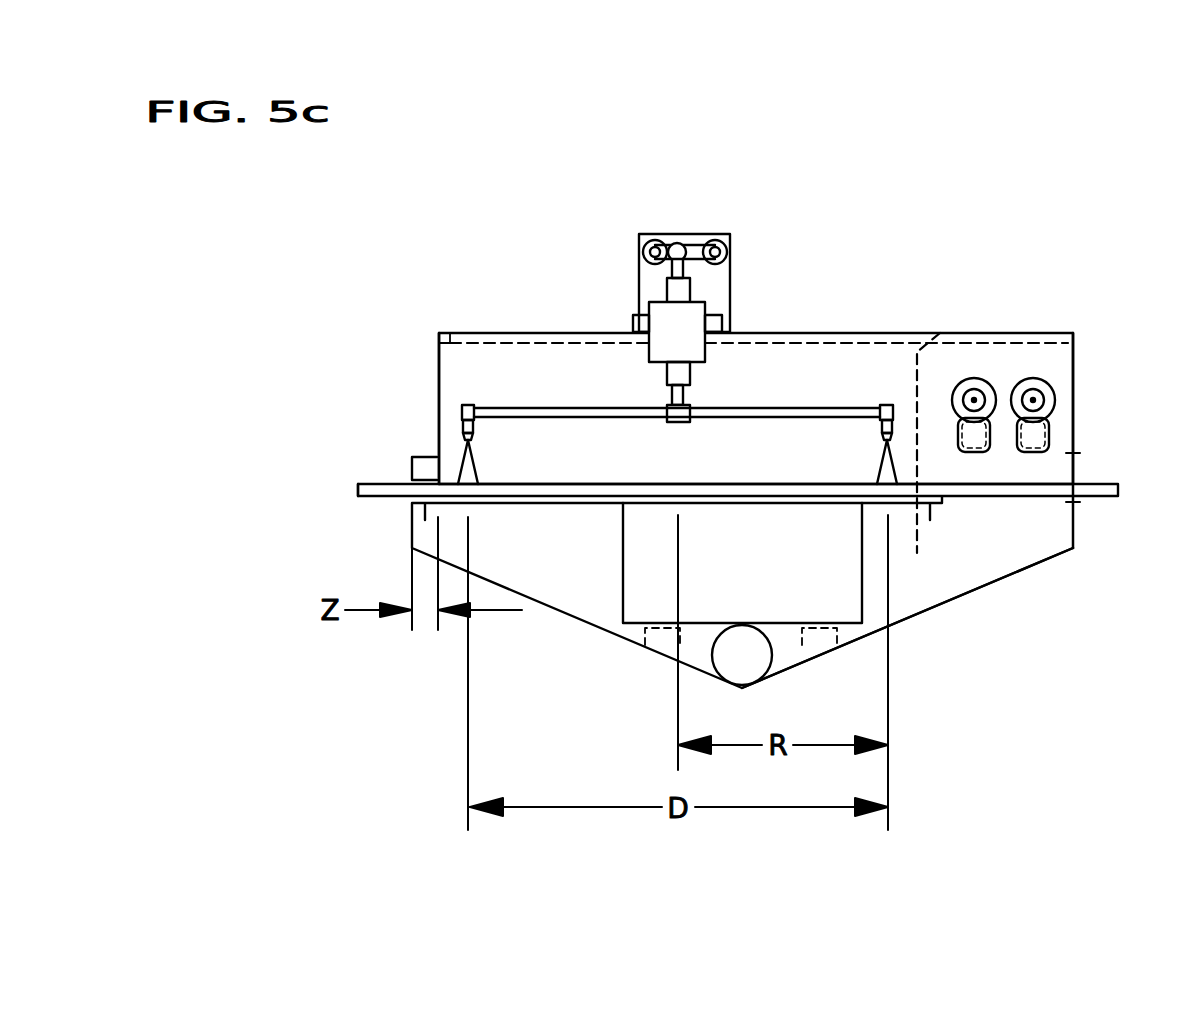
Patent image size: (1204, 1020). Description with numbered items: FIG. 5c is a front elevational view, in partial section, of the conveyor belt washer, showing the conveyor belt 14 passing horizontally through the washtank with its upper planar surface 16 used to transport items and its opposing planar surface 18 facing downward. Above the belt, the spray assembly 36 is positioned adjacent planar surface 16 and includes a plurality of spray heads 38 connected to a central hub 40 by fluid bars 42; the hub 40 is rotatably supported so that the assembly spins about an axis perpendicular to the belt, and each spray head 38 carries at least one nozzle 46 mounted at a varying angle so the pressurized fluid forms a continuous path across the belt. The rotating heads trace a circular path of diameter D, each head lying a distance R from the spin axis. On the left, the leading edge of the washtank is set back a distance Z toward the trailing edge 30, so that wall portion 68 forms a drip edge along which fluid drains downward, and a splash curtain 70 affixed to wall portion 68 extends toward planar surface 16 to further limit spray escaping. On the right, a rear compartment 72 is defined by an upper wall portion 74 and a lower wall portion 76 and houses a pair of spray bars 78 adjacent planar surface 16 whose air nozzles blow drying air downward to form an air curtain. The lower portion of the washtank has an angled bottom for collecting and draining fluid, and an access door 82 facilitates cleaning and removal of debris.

The conveyor belt 14 is at (1100, 480).
The planar surface 16 is at (358, 490).
The planar surface 18 is at (383, 503).
The trailing edge 30 is at (1075, 352).
The spray assembly 36 is at (725, 375).
The spray heads 38 is at (464, 405).
The hub 40 is at (677, 425).
The fluid bars 42 is at (585, 408).
The nozzle 46 is at (463, 437).
The wall portion 68 is at (437, 365).
The splash curtain 70 is at (412, 467).
The rear compartment 72 is at (1007, 300).
The upper wall portion 74 is at (940, 333).
The lower wall portion 76 is at (915, 565).
The spray bars 78 is at (992, 380).
The access door 82 is at (838, 594).